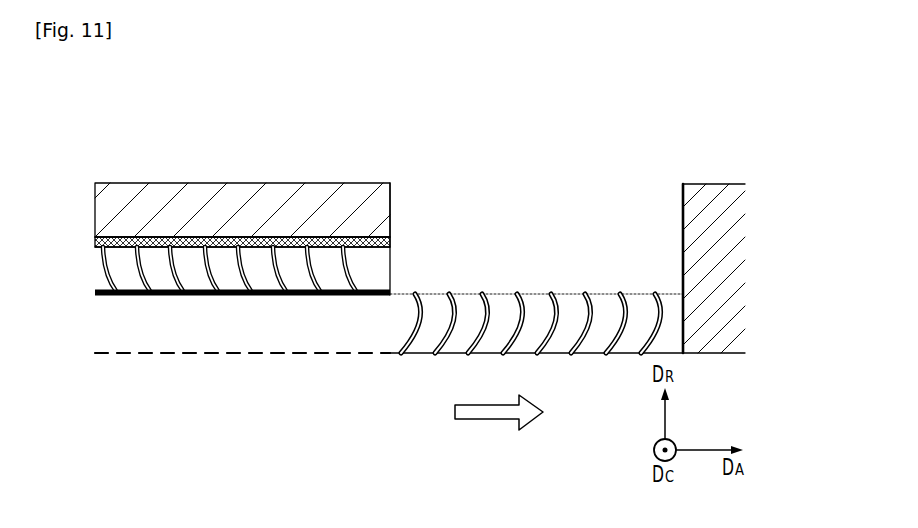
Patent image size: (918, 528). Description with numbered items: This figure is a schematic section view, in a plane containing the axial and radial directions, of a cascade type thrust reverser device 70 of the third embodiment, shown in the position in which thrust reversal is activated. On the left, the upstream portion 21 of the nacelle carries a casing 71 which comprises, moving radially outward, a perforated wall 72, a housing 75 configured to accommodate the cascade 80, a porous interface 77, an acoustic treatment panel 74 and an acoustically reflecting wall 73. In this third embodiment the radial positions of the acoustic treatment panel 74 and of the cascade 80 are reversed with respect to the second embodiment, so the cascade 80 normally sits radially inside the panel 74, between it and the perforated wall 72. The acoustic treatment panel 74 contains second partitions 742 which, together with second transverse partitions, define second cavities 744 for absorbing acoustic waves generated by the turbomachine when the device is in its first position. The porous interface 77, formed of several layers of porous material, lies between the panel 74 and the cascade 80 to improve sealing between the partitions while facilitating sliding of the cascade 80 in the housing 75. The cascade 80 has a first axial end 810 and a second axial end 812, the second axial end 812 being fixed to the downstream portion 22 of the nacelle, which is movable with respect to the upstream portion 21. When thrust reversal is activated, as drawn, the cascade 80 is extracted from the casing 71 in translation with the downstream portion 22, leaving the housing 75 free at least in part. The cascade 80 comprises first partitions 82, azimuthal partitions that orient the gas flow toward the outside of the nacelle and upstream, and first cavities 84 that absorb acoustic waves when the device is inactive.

The thrust reverser device 70 is at (765, 132).
The casing 71 is at (118, 238).
The second partitions 742 is at (213, 265).
The second cavities 744 is at (293, 259).
The upstream portion of the nacelle 21 is at (314, 205).
The acoustically reflecting wall 73 is at (96, 241).
The acoustic treatment panel 74 is at (239, 220).
The porous interface 77 is at (95, 293).
The perforated wall 72 is at (98, 355).
The housing 75 is at (204, 327).
The first axial end 810 is at (396, 293).
The cascade 80 is at (567, 305).
The second axial end 812 is at (677, 287).
The downstream portion of the nacelle 22 is at (715, 268).
The first partitions 82 is at (480, 344).
The first cavities 84 is at (562, 338).